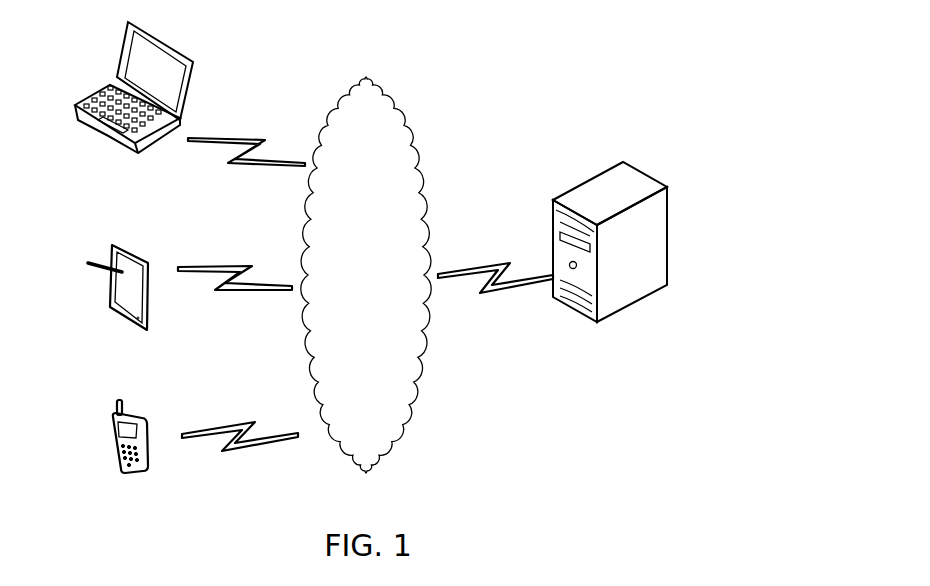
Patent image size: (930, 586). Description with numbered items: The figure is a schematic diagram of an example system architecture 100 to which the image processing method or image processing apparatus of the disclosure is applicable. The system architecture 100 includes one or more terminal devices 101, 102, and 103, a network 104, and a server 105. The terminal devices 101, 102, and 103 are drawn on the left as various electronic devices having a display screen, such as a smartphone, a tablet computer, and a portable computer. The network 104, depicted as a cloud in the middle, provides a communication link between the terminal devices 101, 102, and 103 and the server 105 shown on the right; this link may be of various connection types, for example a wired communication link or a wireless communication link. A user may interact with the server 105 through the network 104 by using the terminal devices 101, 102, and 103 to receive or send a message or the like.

The system architecture 100 is at (628, 41).
The terminal device 101 is at (133, 452).
The terminal device 102 is at (119, 300).
The terminal device 103 is at (134, 106).
The network 104 is at (366, 275).
The server 105 is at (610, 264).